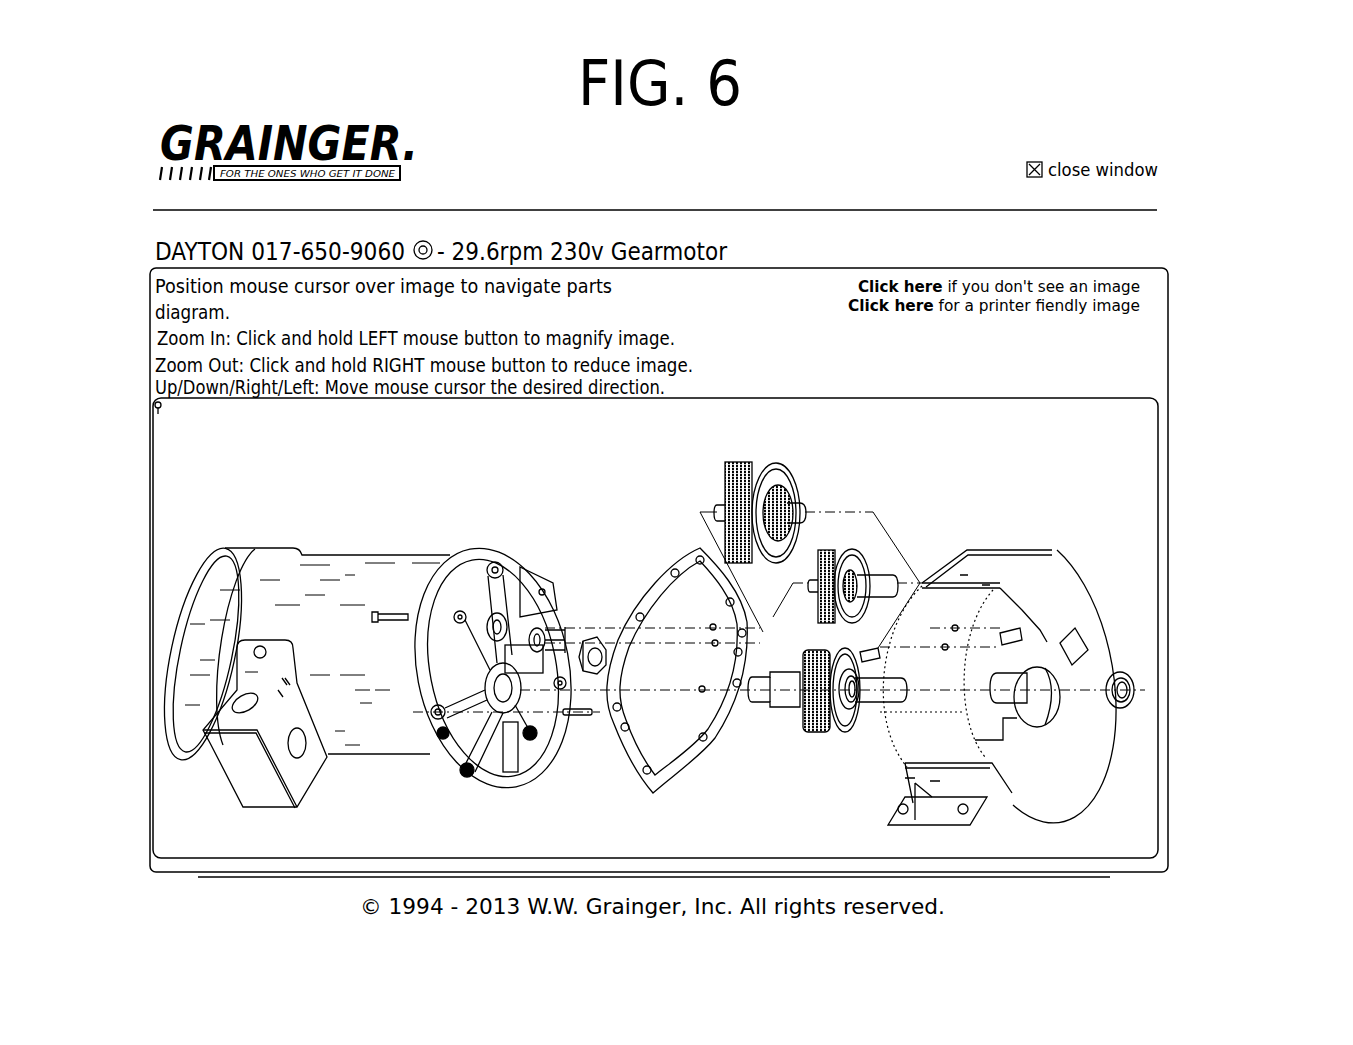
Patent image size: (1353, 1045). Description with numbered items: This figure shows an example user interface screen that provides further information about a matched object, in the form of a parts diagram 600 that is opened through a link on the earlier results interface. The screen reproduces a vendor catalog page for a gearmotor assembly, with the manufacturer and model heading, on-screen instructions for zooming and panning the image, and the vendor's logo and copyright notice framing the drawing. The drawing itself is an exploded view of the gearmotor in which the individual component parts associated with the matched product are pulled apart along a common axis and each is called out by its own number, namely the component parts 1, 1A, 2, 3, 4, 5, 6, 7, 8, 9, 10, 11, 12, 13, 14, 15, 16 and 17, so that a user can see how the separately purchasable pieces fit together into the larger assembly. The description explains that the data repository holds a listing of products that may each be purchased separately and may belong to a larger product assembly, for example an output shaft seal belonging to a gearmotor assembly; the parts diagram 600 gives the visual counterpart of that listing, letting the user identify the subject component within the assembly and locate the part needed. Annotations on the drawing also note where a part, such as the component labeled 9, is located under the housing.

The parts diagram 600 is at (1180, 507).
The motor 1 is at (462, 552).
The gear plate 1A is at (525, 544).
The screw 2 is at (400, 607).
The nut 3 is at (598, 638).
The gear cover 4 is at (682, 543).
The screws 5 is at (708, 630).
The spacer 6 is at (873, 648).
The housing 7 is at (1010, 541).
The bushing 8 is at (1120, 668).
The gasket located under housing 9 is at (1085, 733).
The key 10 is at (572, 726).
The bearing boss 11 is at (503, 727).
The pin 12 is at (551, 597).
The spacer 13 is at (1005, 637).
The bearing 14 is at (842, 713).
The output gear and shaft 15 is at (818, 745).
The gear 16 is at (803, 480).
The gear 17 is at (872, 540).